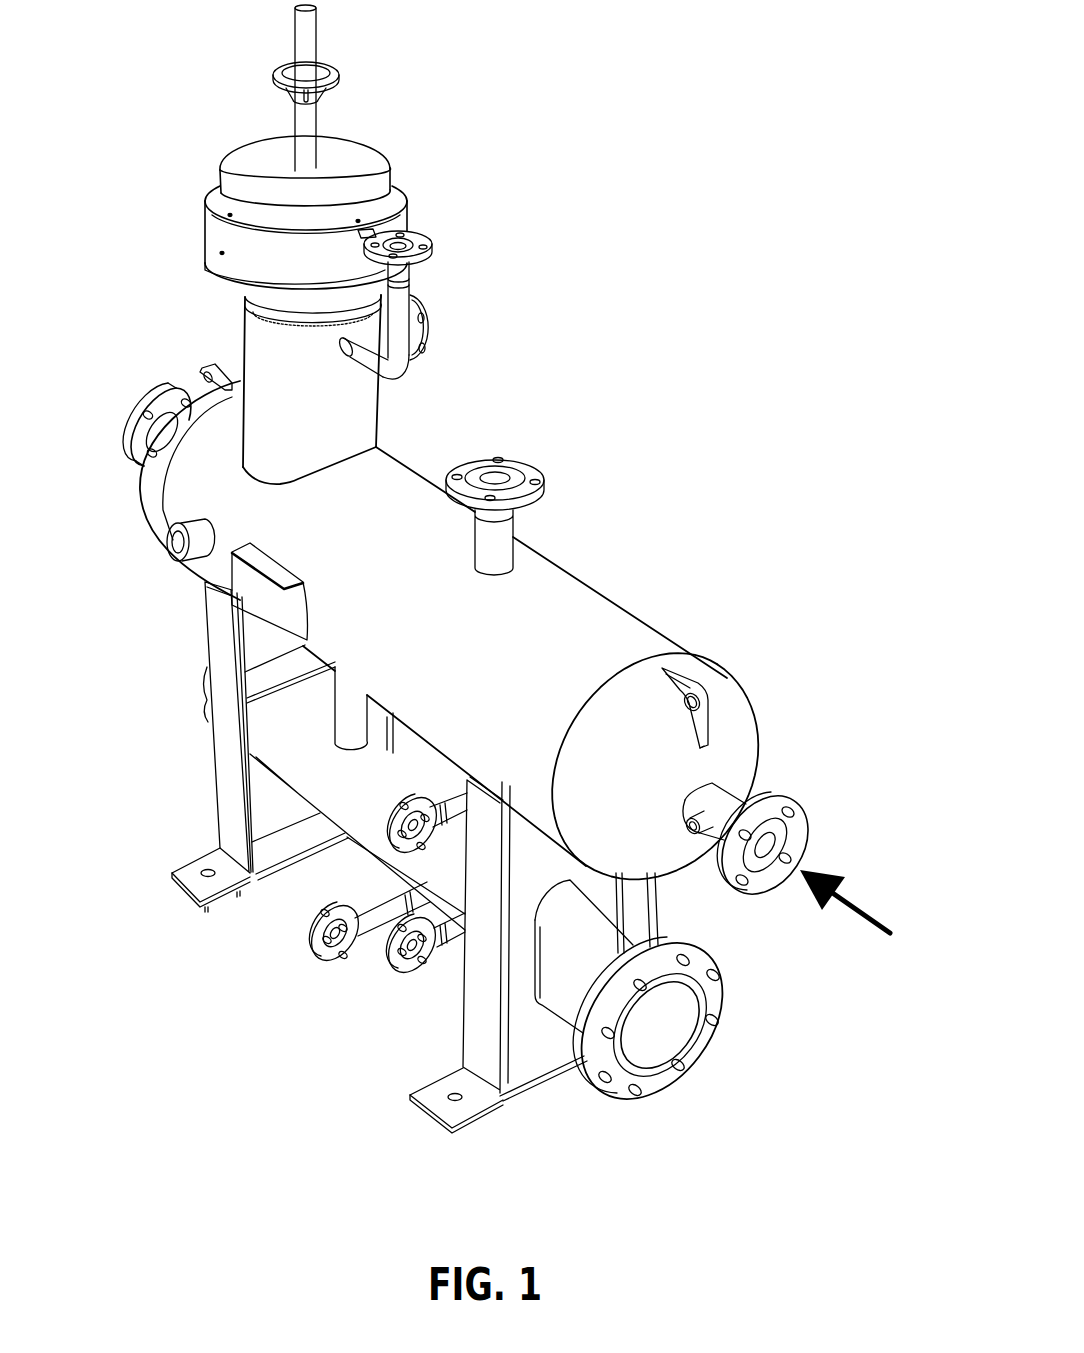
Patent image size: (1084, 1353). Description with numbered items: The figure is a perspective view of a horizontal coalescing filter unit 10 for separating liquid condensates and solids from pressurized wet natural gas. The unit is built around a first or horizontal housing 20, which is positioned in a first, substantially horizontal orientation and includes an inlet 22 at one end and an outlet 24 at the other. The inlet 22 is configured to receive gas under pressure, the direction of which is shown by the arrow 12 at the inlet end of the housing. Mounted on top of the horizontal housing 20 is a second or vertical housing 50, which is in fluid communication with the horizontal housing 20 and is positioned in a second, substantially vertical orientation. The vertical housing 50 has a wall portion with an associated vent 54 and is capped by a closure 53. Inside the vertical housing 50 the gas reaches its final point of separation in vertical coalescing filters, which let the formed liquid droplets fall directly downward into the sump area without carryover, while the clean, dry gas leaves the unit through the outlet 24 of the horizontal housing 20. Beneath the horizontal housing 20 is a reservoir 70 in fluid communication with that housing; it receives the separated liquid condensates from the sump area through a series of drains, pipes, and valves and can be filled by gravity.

The horizontal coalescing filter unit 10 is at (140, 235).
The arrow indicating gas under pressure 12 is at (860, 916).
The first or horizontal housing 20 is at (603, 637).
The inlet 22 is at (782, 833).
The outlet 24 is at (130, 430).
The second or vertical housing 50 is at (385, 410).
The closure 53 is at (335, 158).
The vent 54 is at (422, 237).
The reservoir 70 is at (357, 813).